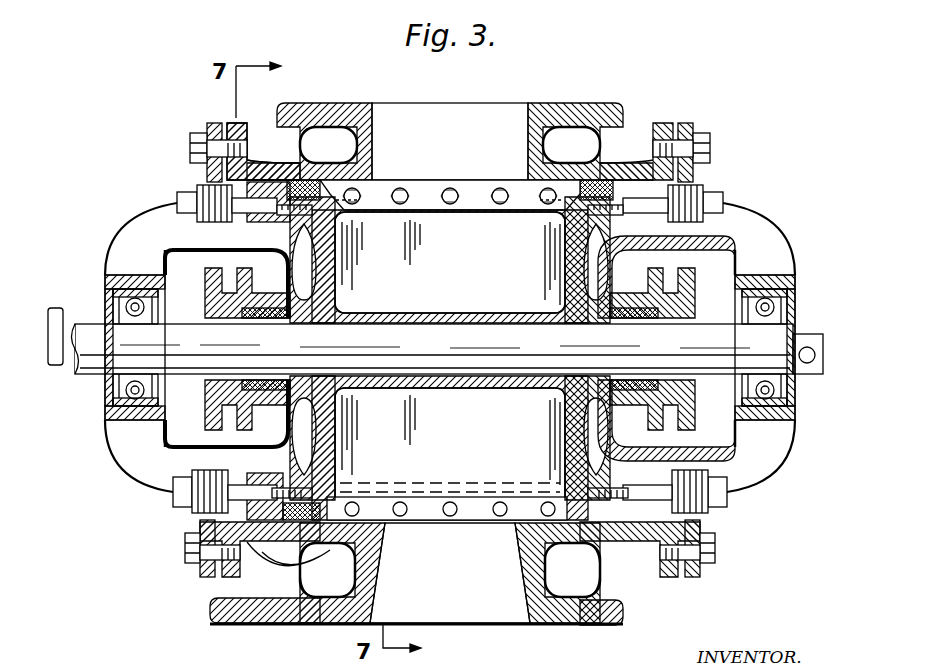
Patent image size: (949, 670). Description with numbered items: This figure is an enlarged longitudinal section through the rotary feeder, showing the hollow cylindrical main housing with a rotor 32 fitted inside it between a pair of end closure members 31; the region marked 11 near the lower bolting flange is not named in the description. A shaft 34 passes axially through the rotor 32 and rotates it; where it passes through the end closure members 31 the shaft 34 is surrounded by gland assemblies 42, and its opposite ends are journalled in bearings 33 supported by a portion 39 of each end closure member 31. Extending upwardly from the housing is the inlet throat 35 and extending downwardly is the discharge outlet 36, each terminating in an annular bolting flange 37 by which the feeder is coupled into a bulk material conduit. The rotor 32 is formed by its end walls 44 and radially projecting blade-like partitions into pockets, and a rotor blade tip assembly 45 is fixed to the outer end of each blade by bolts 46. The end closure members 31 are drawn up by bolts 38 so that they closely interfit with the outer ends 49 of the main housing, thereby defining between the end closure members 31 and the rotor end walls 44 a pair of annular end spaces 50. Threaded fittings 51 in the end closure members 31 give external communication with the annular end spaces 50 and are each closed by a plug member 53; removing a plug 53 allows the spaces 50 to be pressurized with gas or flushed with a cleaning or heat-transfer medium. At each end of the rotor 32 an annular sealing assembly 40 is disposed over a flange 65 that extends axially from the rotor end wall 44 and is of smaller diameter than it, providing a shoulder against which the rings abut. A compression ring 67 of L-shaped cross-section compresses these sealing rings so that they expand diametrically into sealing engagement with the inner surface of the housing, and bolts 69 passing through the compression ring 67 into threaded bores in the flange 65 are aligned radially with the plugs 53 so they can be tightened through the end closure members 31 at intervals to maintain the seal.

The spokes 11 is at (296, 562).
The end closure member 31 is at (217, 123).
The rotor 32 is at (423, 318).
The bearing 33 is at (107, 300).
The shaft 34 is at (503, 333).
The inlet throat 35 is at (433, 122).
The discharge outlet 36 is at (492, 613).
The annular bolting flange 37 is at (348, 113).
The bolt 38 is at (190, 147).
The portion of the end member 39 is at (120, 450).
The annular sealing assembly 40 is at (305, 180).
The gland assembly 42 is at (230, 313).
The rotor end wall 44 is at (325, 265).
The rotor blade tip assembly 45 is at (432, 192).
The bolt 46 is at (400, 190).
The outer end of the main housing 49 is at (248, 162).
The annular end space 50 is at (313, 418).
The threaded fitting 51 is at (195, 215).
The plug member 53 is at (182, 203).
The flange 65 is at (303, 225).
The compression ring 67 is at (275, 467).
The bolt 69 is at (240, 240).